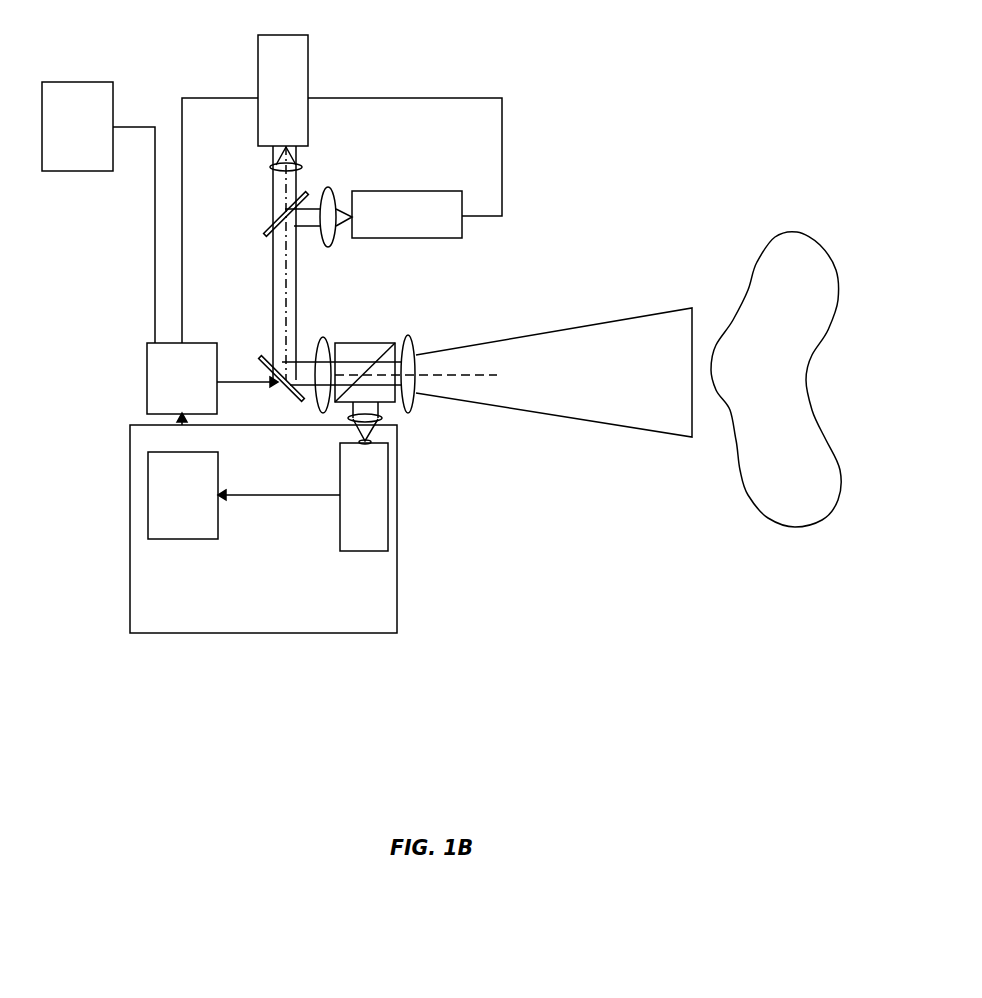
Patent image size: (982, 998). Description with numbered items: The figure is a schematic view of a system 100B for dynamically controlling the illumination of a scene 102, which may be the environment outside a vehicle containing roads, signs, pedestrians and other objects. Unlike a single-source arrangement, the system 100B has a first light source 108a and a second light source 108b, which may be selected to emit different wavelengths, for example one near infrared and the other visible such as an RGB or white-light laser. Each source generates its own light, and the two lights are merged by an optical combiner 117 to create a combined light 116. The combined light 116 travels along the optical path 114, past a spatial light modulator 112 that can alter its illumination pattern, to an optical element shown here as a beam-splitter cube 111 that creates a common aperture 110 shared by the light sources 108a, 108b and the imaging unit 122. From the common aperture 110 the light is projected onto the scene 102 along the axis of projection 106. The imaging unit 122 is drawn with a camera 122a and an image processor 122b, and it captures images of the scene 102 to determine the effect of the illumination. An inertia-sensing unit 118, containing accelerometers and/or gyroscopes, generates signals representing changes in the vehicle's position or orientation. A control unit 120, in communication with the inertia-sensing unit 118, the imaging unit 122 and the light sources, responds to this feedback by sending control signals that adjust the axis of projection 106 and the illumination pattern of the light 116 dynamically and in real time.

The system 100B is at (622, 542).
The scene 102 is at (783, 388).
The axis of projection 106 is at (453, 375).
The first light source 108a is at (258, 58).
The second light source 108b is at (422, 238).
The common aperture 110 is at (414, 404).
The beam splitter cube 111 is at (395, 400).
The spatial light modulator 112 is at (290, 400).
The optical path 114 is at (287, 312).
The combined light 116 is at (273, 265).
The optical combiner 117 is at (265, 232).
The inertia-sensing unit 118 is at (67, 171).
The control unit 120 is at (147, 377).
The imaging unit 122 is at (260, 633).
The camera 122a is at (360, 551).
The image processor 122b is at (177, 539).